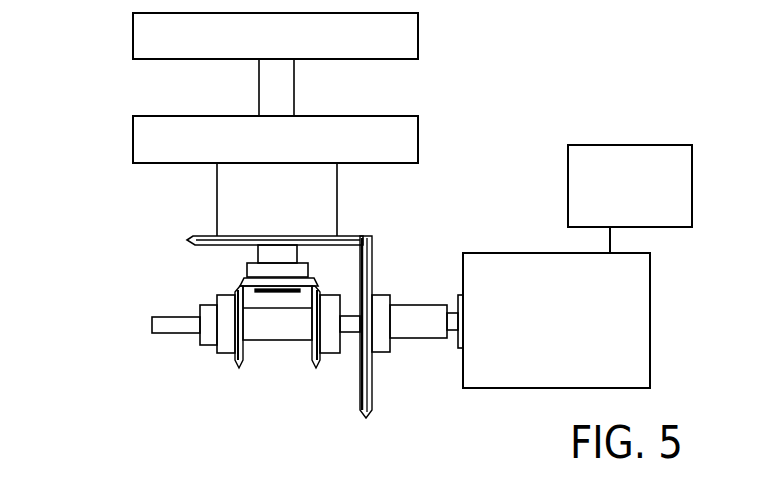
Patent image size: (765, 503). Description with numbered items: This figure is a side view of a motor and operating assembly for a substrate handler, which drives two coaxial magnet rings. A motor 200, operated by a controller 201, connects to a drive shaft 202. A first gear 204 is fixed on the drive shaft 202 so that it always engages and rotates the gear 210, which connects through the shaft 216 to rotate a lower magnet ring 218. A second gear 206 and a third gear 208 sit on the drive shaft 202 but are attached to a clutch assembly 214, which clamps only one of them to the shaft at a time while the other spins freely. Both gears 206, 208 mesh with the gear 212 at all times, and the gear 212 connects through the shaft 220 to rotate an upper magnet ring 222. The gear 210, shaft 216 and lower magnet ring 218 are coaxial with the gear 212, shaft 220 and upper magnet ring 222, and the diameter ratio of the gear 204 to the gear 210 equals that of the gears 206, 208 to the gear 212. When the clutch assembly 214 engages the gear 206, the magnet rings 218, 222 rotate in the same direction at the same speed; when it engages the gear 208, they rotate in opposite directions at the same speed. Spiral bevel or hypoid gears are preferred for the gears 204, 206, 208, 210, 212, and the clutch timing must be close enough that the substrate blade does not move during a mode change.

The motor 200 is at (540, 388).
The controller 201 is at (568, 193).
The drive shaft 202 is at (162, 334).
The first gear 204 is at (365, 418).
The second gear 206 is at (315, 370).
The third gear 208 is at (238, 370).
The gear 210 is at (203, 236).
The gear 212 is at (243, 276).
The clutch assembly 214 is at (290, 340).
The shaft 216 is at (337, 205).
The lower magnet ring 218 is at (133, 137).
The shaft 220 is at (259, 98).
The upper magnet ring 222 is at (133, 41).